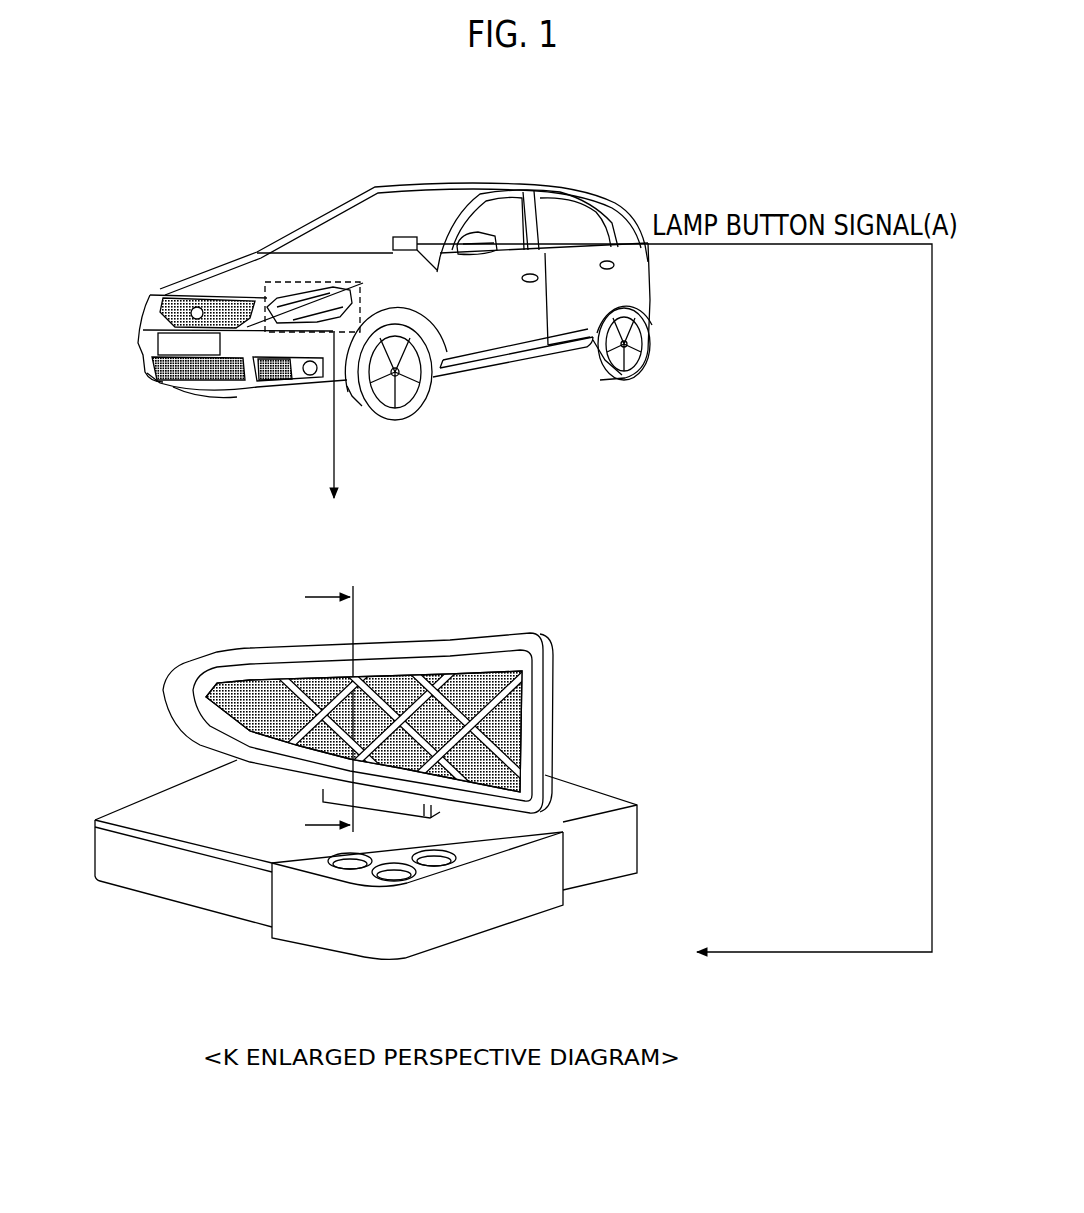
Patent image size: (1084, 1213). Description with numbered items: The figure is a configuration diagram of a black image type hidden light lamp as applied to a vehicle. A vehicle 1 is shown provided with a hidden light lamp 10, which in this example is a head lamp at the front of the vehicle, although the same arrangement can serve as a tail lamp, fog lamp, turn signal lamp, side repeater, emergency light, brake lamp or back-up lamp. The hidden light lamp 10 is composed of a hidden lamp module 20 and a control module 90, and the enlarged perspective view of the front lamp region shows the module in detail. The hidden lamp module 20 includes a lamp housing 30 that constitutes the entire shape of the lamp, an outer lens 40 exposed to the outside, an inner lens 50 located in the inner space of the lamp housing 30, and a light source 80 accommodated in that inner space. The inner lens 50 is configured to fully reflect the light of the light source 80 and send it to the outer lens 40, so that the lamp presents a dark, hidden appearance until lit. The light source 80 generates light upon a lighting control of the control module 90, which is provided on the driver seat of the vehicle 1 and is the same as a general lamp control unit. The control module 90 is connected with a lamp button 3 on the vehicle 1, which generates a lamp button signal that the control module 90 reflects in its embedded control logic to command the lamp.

The vehicle 1 is at (377, 188).
The lamp button 3 is at (403, 265).
The hidden light lamp 10 is at (118, 715).
The hidden lamp module 20 is at (677, 587).
The lamp housing 30 is at (543, 742).
The outer lens 40 is at (553, 772).
The inner lens 50 is at (522, 727).
The light source 80 is at (480, 665).
The control module 90 is at (527, 897).